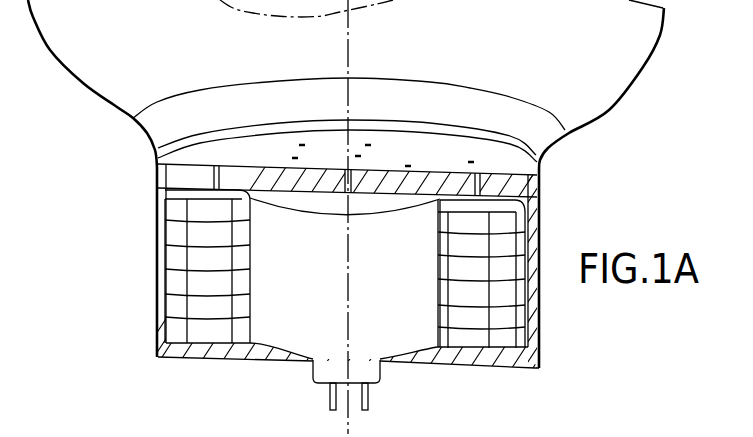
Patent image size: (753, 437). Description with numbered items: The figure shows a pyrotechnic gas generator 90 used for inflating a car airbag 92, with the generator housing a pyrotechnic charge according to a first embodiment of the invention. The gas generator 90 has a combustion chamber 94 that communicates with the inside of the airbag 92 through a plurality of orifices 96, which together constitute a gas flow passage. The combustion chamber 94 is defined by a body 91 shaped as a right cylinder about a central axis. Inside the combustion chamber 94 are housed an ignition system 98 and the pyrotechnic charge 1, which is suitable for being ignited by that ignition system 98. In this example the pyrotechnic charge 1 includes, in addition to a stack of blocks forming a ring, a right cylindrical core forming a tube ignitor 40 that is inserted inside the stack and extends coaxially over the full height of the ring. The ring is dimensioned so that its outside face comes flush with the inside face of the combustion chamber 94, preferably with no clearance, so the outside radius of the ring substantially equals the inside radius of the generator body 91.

The pyrotechnic charge 1 is at (506, 316).
The tube ignitor 40 is at (272, 332).
The pyrotechnic gas generator 90 is at (124, 202).
The body 91 is at (160, 307).
The car airbag 92 is at (643, 67).
The combustion chamber 94 is at (525, 196).
The orifices 96 is at (245, 152).
The ignition system 98 is at (371, 378).